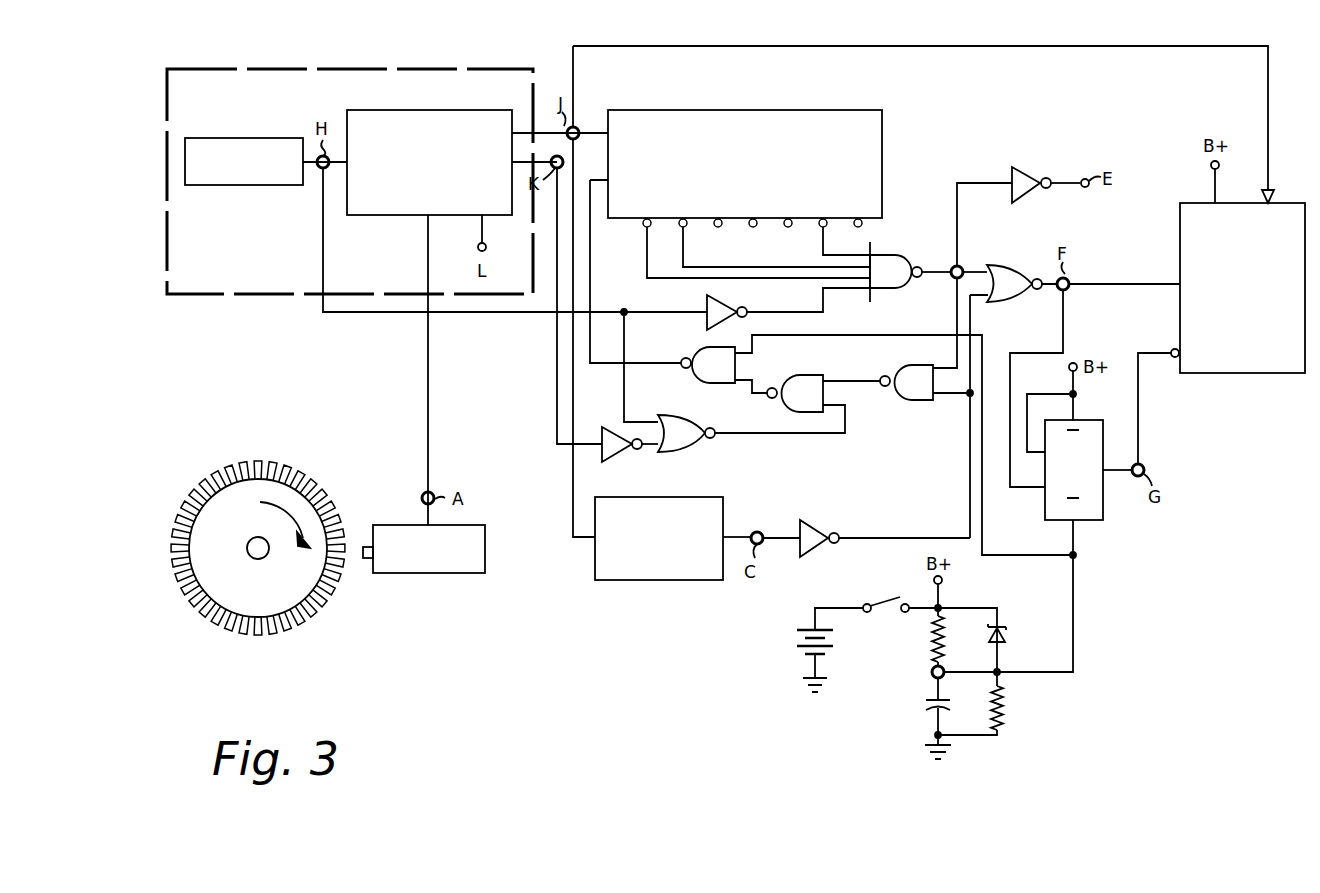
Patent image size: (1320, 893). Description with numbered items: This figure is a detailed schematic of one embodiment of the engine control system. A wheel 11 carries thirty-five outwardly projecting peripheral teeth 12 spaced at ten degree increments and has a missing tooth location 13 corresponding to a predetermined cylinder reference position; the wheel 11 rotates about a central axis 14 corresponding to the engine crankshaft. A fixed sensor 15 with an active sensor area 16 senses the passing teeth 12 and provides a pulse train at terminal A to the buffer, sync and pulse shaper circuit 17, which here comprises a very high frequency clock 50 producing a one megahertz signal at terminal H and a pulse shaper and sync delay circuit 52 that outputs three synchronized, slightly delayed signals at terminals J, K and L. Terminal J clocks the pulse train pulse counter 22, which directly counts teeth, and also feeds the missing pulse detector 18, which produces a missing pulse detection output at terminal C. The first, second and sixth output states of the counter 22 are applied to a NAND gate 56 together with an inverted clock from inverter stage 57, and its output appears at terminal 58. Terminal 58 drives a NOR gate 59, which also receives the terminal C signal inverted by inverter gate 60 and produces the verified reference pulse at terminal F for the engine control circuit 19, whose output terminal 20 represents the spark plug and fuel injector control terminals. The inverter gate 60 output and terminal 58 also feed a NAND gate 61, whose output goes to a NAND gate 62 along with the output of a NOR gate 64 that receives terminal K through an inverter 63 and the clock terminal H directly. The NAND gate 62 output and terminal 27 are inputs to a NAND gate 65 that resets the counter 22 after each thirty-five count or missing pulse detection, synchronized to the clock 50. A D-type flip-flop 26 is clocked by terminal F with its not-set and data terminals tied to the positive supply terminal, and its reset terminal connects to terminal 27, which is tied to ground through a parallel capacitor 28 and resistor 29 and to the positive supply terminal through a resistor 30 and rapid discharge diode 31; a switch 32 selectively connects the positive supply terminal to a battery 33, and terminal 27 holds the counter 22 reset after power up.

The wheel 11 is at (274, 486).
The teeth 12 is at (229, 615).
The missing tooth location 13 is at (270, 622).
The central axis 14 is at (247, 550).
The sensor 15 is at (483, 525).
The active sensor area 16 is at (366, 547).
The buffer, sync and pulse shaper circuit 17 is at (428, 68).
The missing pulse detector 18 is at (598, 580).
The engine control circuit 19 is at (1180, 217).
The output terminal 20 is at (1245, 373).
The pulse train pulse counter 22 is at (882, 147).
The flip-flop 26 is at (1045, 516).
The terminal 27 is at (930, 672).
The capacitor 28 is at (924, 706).
The resistor 29 is at (1006, 707).
The resistor 30 is at (930, 637).
The rapid discharge diode 31 is at (1006, 638).
The switch 32 is at (887, 598).
The battery 33 is at (795, 640).
The clock 50 is at (248, 138).
The pulse shaper and sync delay circuit 52 is at (468, 110).
The NAND gate 56 is at (900, 256).
The inverter stage 57 is at (727, 300).
The terminal 58 is at (963, 266).
The NOR gate 59 is at (1012, 302).
The inverter gate 60 is at (814, 529).
The NAND gate 61 is at (915, 400).
The NAND gate 62 is at (805, 375).
The inverter 63 is at (610, 462).
The NOR gate 64 is at (675, 452).
The NAND gate 65 is at (717, 383).